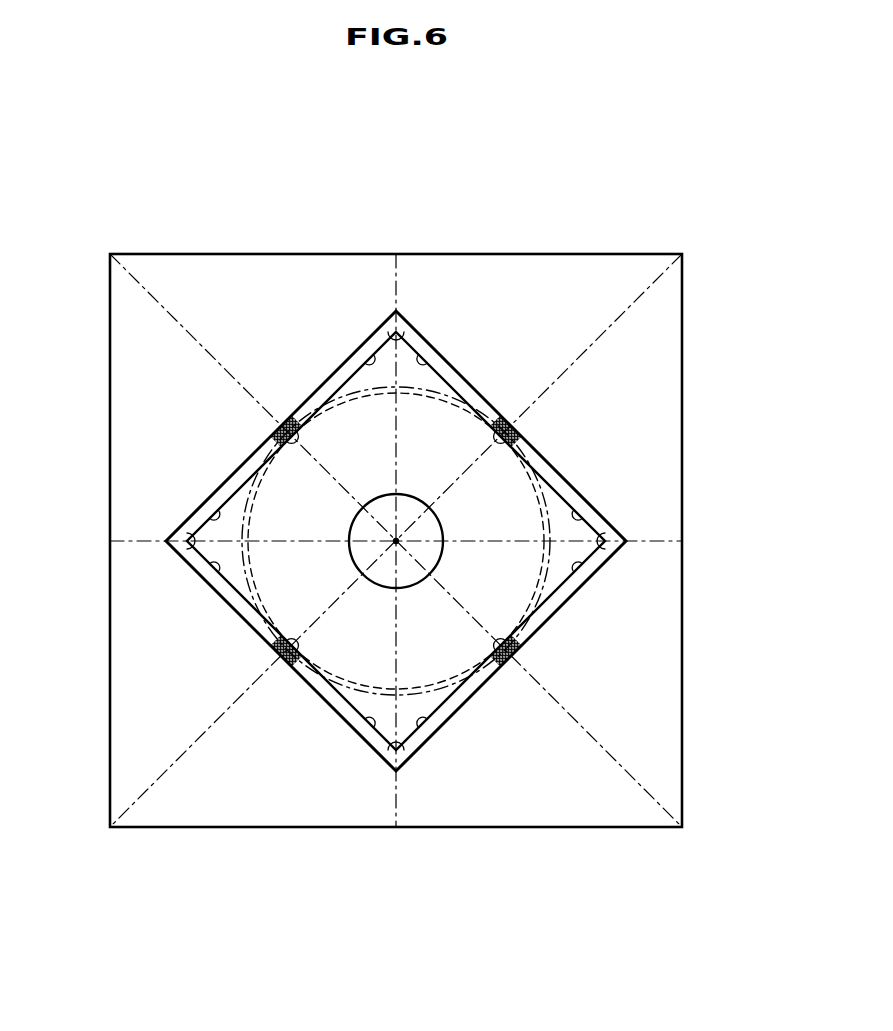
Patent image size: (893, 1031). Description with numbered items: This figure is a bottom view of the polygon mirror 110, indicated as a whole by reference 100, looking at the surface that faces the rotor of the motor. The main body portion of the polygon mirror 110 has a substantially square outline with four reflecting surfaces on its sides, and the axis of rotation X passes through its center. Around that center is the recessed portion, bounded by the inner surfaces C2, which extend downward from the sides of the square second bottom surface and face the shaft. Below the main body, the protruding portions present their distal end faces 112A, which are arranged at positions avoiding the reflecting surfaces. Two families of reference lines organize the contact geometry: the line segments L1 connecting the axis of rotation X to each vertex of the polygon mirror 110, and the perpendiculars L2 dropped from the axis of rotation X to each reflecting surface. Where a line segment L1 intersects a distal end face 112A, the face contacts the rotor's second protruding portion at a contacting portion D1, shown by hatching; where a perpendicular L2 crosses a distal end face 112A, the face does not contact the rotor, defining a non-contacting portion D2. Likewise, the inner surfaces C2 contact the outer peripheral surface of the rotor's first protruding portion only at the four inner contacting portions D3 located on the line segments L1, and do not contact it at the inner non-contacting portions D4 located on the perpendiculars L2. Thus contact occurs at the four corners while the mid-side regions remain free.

The imaging device / lens unit 100 is at (586, 173).
The polygon mirror 110 is at (684, 306).
The distal end faces 112A is at (396, 540).
The contacting portions D1 is at (296, 412).
The non-contacting portions D2 is at (328, 386).
The inner contacting portions D3 is at (268, 440).
The inner non-contacting portions D4 is at (421, 356).
The inner surfaces C2 is at (365, 362).
The line segment L1 is at (130, 273).
The perpendicular L2 is at (397, 278).
The axis of rotation X is at (400, 543).